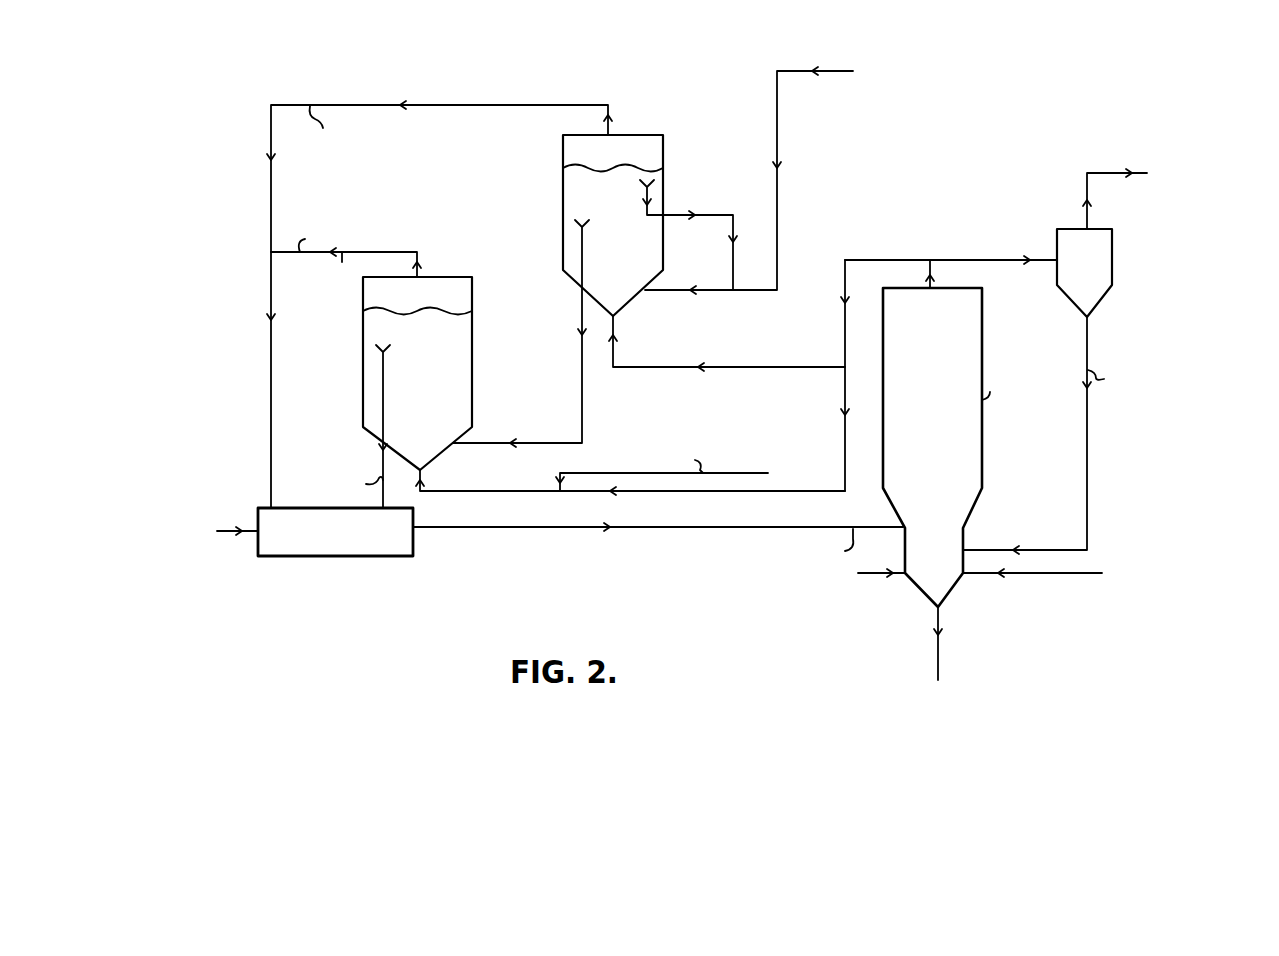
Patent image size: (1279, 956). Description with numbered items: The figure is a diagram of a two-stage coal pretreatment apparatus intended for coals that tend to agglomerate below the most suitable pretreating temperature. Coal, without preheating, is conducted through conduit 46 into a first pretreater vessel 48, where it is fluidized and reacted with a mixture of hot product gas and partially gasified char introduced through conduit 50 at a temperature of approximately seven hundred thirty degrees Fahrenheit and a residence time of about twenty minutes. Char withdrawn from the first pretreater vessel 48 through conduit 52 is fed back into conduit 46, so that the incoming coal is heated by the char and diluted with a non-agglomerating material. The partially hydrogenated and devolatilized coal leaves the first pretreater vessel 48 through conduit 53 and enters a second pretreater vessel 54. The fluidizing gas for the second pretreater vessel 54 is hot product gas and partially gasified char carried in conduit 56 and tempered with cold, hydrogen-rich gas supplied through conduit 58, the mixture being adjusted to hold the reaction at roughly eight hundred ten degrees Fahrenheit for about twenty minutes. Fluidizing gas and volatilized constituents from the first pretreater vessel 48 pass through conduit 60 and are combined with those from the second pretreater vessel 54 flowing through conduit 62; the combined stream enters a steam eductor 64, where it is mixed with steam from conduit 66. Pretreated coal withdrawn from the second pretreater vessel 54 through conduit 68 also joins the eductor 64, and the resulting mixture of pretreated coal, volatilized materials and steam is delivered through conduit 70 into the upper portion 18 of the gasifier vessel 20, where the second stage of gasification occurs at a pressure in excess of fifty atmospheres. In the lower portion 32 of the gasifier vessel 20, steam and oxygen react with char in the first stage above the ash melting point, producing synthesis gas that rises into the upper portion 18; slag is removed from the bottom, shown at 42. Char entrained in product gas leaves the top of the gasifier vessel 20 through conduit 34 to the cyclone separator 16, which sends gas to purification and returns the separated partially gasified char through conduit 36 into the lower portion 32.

The cyclone separator 16 is at (1162, 240).
The upper portion of gasifier vessel 18 is at (982, 318).
The gasifier vessel 20 is at (931, 352).
The lower portion of gasifier vessel 32 is at (964, 528).
The conduit 34 is at (995, 262).
The conduit 36 is at (1087, 432).
The slag outlet 42 is at (938, 656).
The conduit 46 is at (777, 122).
The first pretreater vessel 48 is at (613, 225).
The conduit 50 is at (728, 367).
The conduit 52 is at (733, 276).
The conduit 53 is at (582, 372).
The second pretreater vessel 54 is at (417, 373).
The conduit 56 is at (845, 445).
The conduit 58 is at (600, 472).
The conduit 60 is at (355, 105).
The conduit 62 is at (354, 249).
The steam eductor 64 is at (320, 557).
The conduit 66 is at (251, 531).
The conduit 68 is at (383, 490).
The conduit 70 is at (495, 528).